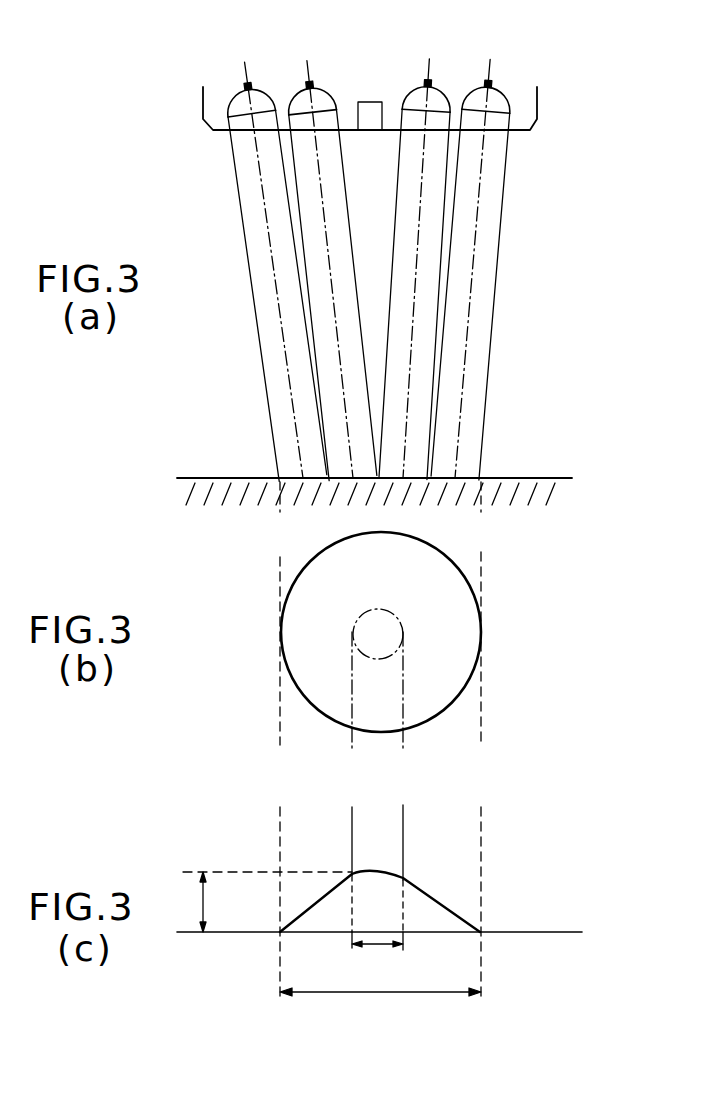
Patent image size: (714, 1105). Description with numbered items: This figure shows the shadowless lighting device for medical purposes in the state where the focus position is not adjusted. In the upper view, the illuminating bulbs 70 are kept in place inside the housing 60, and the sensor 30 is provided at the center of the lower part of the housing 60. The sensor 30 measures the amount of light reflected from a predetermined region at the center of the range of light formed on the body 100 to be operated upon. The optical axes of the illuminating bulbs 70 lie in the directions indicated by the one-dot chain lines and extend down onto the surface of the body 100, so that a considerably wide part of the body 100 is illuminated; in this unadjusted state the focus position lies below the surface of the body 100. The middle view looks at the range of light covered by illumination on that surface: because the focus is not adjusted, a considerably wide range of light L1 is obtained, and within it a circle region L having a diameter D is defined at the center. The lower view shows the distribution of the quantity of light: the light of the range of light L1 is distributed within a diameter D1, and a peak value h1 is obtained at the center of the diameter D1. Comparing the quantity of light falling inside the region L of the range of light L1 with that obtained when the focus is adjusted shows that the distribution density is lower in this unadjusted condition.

The illuminating bulbs 70 is at (303, 100).
The sensor 30 is at (372, 102).
The housing 60 is at (537, 100).
The body to be operated upon 100 is at (550, 478).
The range of light L1 is at (462, 568).
The circle region L is at (398, 618).
The peak value h1 is at (267, 902).
The diameter of circle region D is at (377, 959).
The diameter D1 is at (380, 1008).